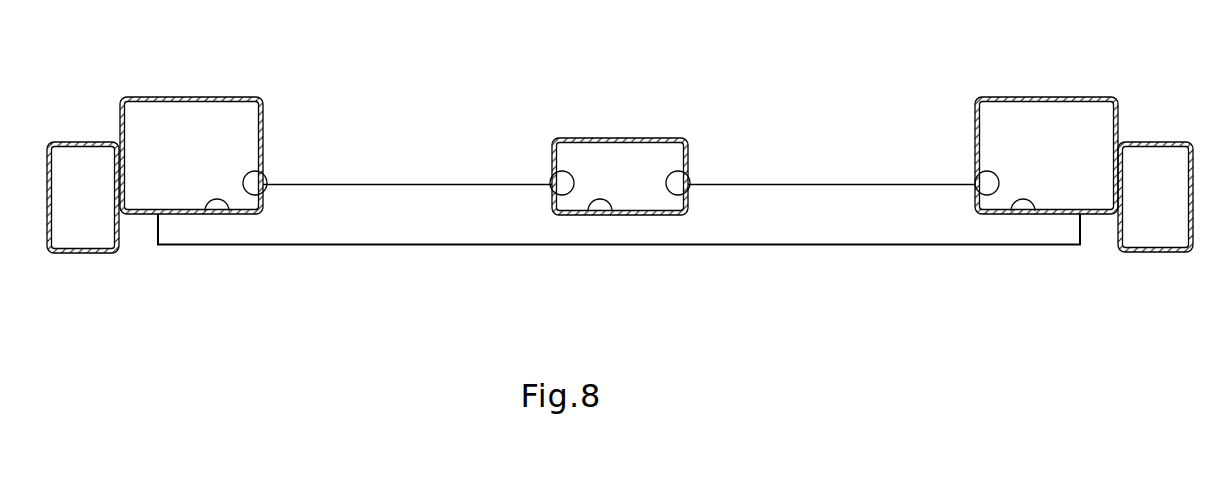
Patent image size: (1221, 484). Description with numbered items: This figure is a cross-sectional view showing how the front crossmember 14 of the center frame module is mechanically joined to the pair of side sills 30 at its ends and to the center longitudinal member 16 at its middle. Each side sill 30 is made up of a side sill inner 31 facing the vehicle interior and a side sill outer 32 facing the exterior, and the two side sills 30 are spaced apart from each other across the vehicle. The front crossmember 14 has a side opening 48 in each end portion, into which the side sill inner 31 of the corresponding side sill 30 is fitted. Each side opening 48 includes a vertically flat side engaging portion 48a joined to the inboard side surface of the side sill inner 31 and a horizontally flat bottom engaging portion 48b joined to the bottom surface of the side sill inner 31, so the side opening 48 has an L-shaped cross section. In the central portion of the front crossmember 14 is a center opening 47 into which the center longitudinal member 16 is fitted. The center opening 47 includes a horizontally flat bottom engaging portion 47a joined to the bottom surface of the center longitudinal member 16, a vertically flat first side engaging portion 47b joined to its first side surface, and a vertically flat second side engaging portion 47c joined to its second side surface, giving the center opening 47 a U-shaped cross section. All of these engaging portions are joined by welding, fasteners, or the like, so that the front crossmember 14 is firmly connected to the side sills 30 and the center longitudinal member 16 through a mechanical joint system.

The front crossmember 14 is at (830, 225).
The center longitudinal member 16 is at (617, 137).
The side sill 30 is at (620, 152).
The side sill inner 31 is at (82, 141).
The side sill outer 32 is at (1153, 141).
The center opening 47 is at (620, 187).
The bottom engaging portion 47a is at (606, 213).
The first side engaging portion 47b is at (556, 175).
The second side engaging portion 47c is at (683, 175).
The side opening 48 is at (619, 174).
The side engaging portion 48a is at (262, 175).
The bottom engaging portion 48b is at (205, 215).